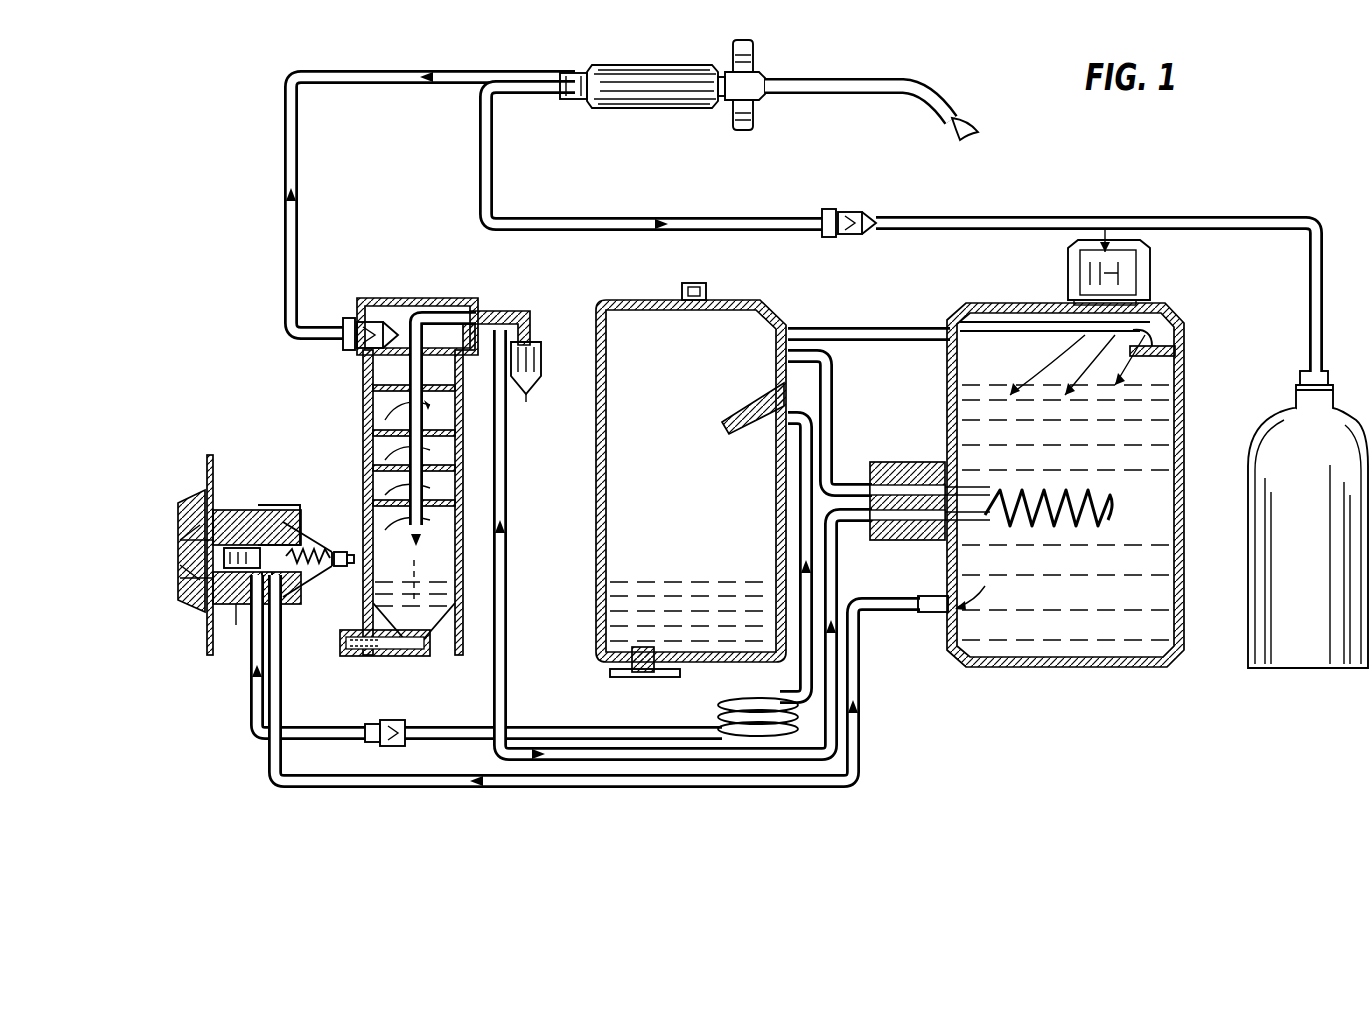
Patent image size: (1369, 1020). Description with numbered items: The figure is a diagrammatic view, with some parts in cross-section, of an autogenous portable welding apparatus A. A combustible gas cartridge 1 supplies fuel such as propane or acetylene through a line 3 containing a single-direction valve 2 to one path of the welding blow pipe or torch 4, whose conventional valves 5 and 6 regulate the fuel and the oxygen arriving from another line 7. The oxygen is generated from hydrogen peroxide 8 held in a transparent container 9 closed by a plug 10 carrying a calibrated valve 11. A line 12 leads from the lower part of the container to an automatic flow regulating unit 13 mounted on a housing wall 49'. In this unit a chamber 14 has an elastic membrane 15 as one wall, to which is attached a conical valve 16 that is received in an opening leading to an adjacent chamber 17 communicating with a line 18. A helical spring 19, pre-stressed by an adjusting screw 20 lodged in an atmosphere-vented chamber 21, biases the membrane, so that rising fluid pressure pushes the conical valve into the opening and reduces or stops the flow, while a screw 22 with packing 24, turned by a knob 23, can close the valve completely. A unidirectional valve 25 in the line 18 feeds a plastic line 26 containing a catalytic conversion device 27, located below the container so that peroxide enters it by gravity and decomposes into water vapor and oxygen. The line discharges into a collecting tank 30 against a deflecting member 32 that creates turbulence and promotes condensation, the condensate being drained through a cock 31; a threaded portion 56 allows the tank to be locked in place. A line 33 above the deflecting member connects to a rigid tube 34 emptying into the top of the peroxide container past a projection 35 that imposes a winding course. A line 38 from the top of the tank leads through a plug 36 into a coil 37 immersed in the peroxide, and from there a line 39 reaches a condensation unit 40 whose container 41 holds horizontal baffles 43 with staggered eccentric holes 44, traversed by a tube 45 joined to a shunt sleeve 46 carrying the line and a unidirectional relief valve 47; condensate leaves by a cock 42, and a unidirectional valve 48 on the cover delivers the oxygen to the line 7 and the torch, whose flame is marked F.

The combustible gas cartridge 1 is at (1292, 545).
The single-direction valve 2 is at (849, 210).
The line or conduit 3 is at (490, 155).
The welding blow pipe or torch 4 is at (666, 66).
The valve 5 is at (756, 120).
The valve 6 is at (756, 52).
The line or conduit 7 is at (295, 165).
The hydrogen peroxide 8 is at (1160, 440).
The container 9 is at (1172, 500).
The plug 10 is at (1152, 270).
The calibrated valve 11 is at (1105, 230).
The line or conduit 12 is at (425, 783).
The automatic fluid flow regulating valve 13 is at (246, 497).
The chamber 14 is at (268, 510).
The elastic membrane 15 is at (306, 606).
The conical valve 16 is at (285, 508).
The chamber 17 is at (238, 606).
The line or conduit 18 is at (250, 710).
The cylindrical helical spring 19 is at (315, 526).
The adjusting screw 20 is at (345, 550).
The chamber 21 is at (310, 572).
The screw 22 is at (195, 610).
The handgrip or knob 23 is at (200, 503).
The packing material 24 is at (246, 547).
The unidirectional valve 25 is at (393, 720).
The line or conduit 26 is at (580, 733).
The conversion device 27 is at (805, 720).
The container 30 is at (606, 310).
The discharge valve or cock 31 is at (658, 678).
The internal projection or deflecting member 32 is at (742, 408).
The line 33 is at (862, 329).
The rigid tube 34 is at (1003, 320).
The projection 35 is at (1185, 372).
The plug 36 is at (920, 462).
The coil 37 is at (1110, 515).
The line 38 is at (834, 372).
The line or conduit 39 is at (507, 525).
The condensation unit 40 is at (433, 299).
The container 41 is at (362, 366).
The discharge valve or cock 42 is at (352, 656).
The horizontal division baffles 43 is at (440, 428).
The eccentric holes 44 is at (373, 440).
The tube 45 is at (410, 397).
The shunt sleeve 46 is at (522, 316).
The unidirectional valve 47 is at (543, 363).
The unidirectional valve 48 is at (348, 320).
The housing wall 49' is at (208, 536).
The threaded portion 56 is at (708, 288).
The autogenous portable welding apparatus A is at (879, 70).
The flame F is at (980, 127).